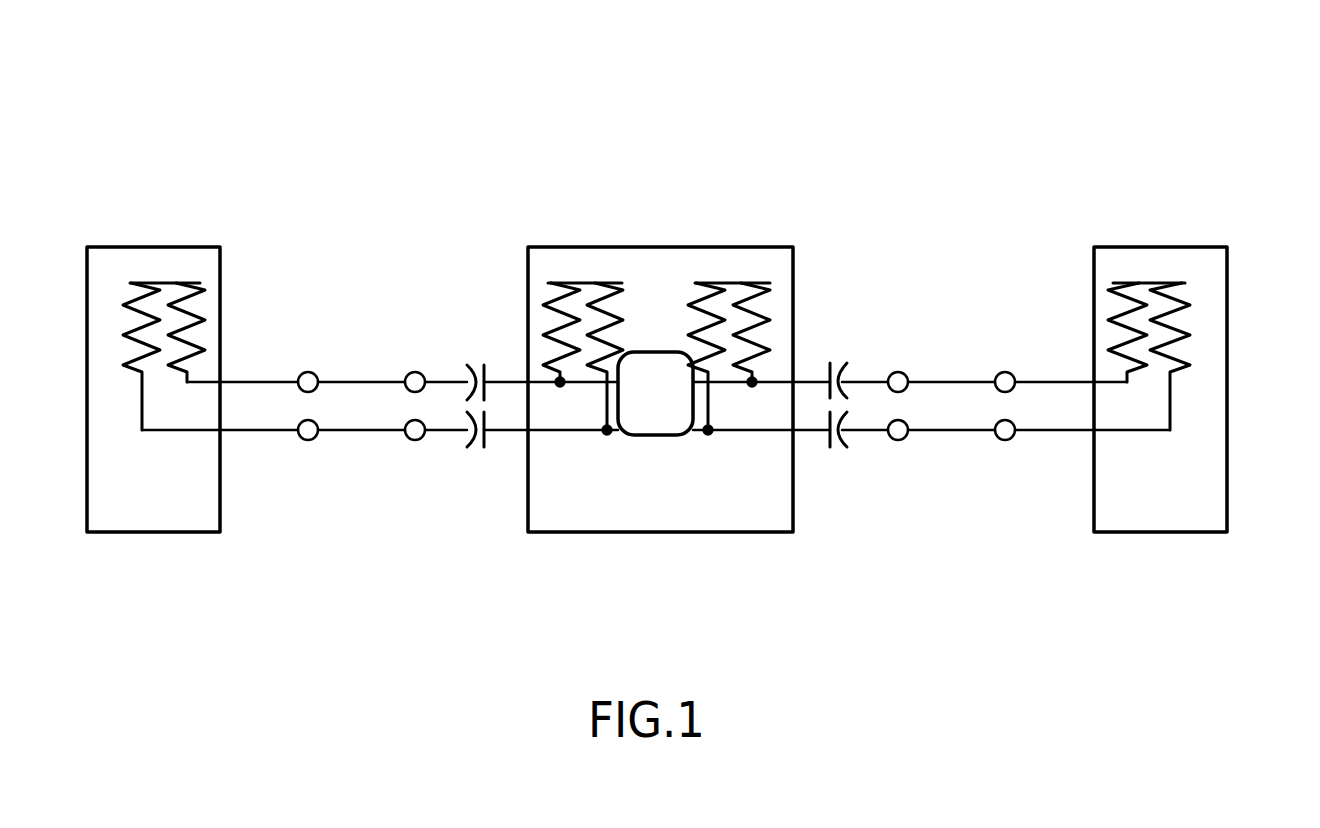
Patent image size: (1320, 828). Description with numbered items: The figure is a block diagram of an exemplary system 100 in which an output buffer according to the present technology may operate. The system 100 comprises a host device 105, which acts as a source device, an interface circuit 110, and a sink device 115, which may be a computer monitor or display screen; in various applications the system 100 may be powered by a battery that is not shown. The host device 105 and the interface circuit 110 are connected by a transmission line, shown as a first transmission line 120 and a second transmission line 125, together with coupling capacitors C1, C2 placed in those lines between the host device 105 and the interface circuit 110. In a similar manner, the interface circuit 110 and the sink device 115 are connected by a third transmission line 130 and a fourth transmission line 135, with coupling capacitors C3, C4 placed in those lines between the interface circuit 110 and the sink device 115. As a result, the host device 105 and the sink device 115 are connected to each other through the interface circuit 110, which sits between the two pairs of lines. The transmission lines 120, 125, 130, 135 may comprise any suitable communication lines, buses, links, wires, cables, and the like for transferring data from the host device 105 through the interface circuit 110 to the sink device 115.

The system 100 is at (352, 92).
The host device 105 is at (220, 287).
The interface circuit 110 is at (793, 267).
The sink device 115 is at (1227, 292).
The first transmission line 120 is at (277, 378).
The second transmission line 125 is at (273, 433).
The third transmission line 130 is at (872, 377).
The fourth transmission line 135 is at (870, 434).
The coupling capacitor C1 is at (467, 365).
The coupling capacitor C2 is at (467, 447).
The coupling capacitor C3 is at (847, 363).
The coupling capacitor C4 is at (847, 447).